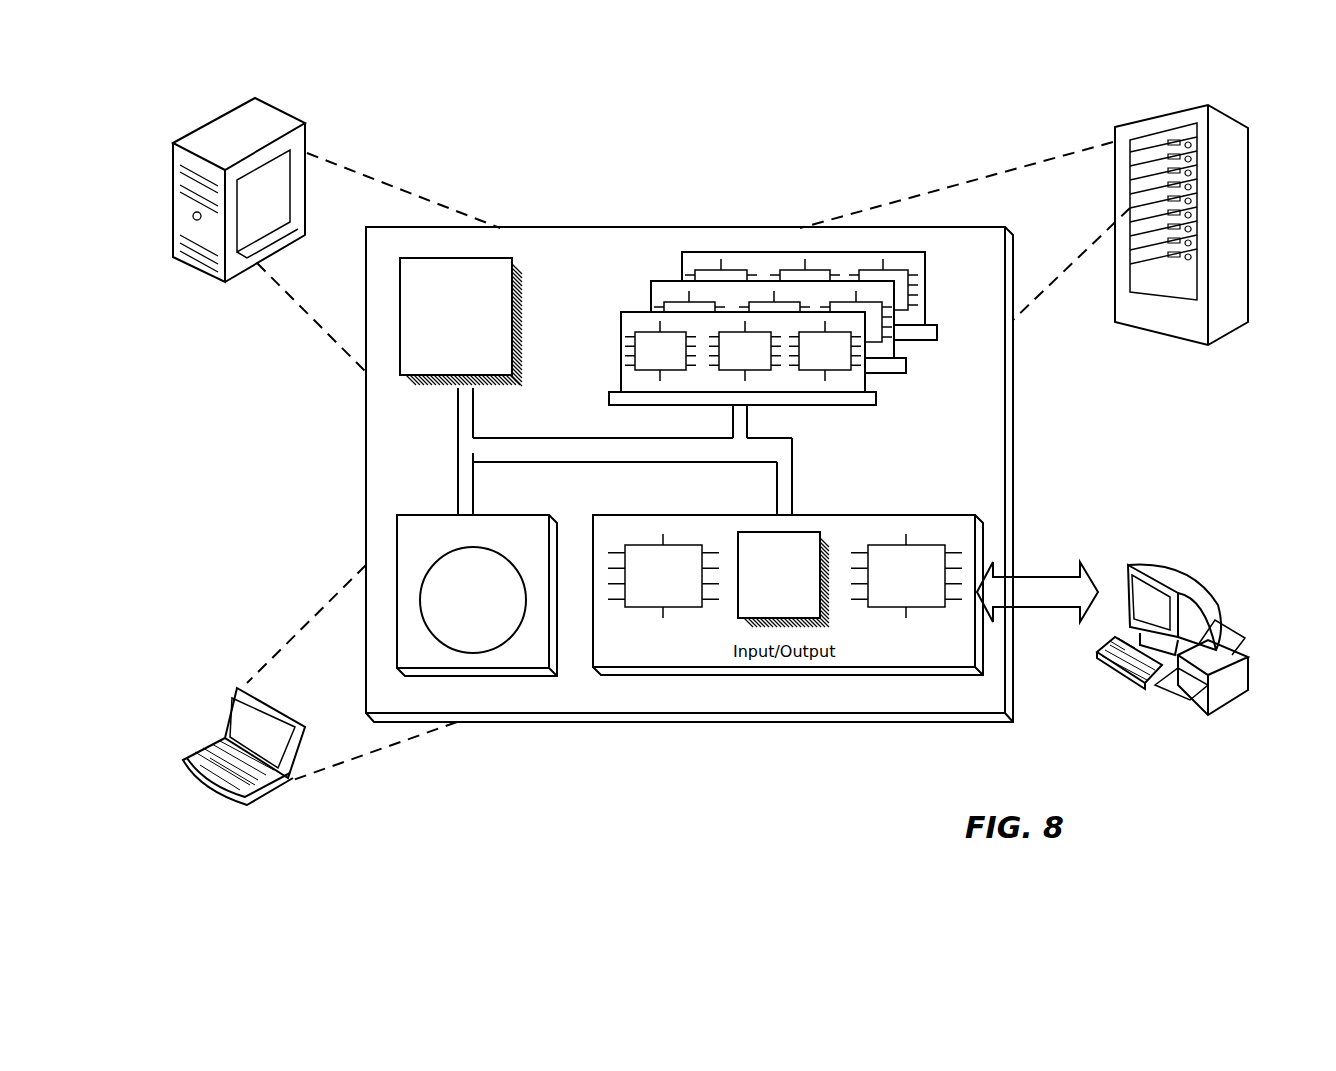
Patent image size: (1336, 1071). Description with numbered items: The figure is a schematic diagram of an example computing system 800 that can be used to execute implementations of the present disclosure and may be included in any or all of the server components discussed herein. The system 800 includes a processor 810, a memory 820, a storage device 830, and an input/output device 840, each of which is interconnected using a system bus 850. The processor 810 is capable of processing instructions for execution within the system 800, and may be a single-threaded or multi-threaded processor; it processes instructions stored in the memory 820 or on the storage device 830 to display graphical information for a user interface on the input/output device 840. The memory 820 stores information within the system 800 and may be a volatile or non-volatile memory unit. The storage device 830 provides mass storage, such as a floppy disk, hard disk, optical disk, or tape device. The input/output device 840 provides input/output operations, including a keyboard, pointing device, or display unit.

The computing system 800 is at (532, 117).
The processor 810 is at (461, 322).
The memory 820 is at (928, 371).
The storage device 830 is at (477, 595).
The input/output device 840 is at (1128, 569).
The system bus 850 is at (619, 453).